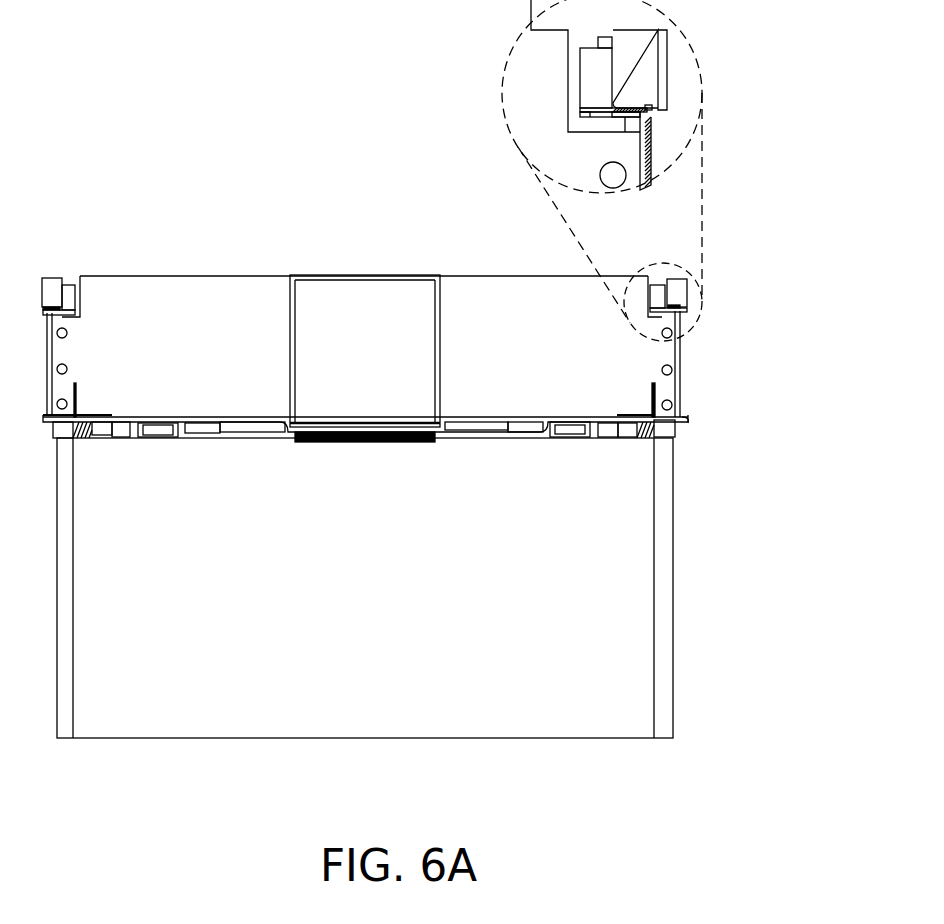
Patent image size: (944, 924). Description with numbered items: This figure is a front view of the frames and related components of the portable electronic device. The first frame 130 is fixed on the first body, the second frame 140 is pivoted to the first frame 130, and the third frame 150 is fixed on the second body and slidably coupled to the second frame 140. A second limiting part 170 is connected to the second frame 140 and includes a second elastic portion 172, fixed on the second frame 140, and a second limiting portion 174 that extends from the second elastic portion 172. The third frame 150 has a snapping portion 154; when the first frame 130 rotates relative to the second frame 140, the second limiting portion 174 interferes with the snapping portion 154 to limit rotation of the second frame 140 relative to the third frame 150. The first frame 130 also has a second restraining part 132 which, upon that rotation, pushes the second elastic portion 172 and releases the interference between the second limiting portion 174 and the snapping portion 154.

The first frame 130 is at (580, 418).
The second restraining part 132 is at (688, 415).
The second frame 140 is at (635, 353).
The third frame 150 is at (593, 608).
The snapping portion 154 is at (623, 113).
The second limiting part 170 is at (780, 23).
The second elastic portion 172 is at (648, 145).
The second limiting portion 174 is at (633, 108).